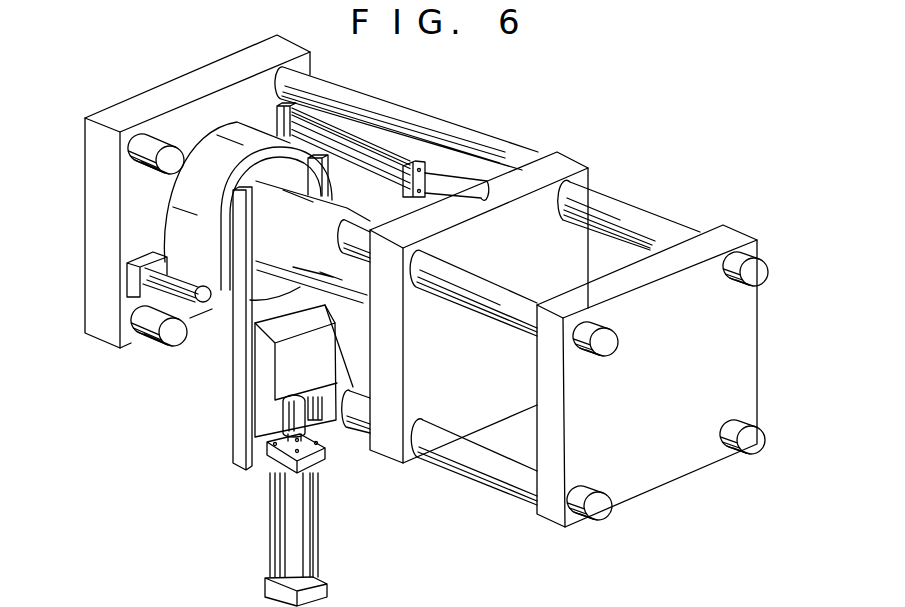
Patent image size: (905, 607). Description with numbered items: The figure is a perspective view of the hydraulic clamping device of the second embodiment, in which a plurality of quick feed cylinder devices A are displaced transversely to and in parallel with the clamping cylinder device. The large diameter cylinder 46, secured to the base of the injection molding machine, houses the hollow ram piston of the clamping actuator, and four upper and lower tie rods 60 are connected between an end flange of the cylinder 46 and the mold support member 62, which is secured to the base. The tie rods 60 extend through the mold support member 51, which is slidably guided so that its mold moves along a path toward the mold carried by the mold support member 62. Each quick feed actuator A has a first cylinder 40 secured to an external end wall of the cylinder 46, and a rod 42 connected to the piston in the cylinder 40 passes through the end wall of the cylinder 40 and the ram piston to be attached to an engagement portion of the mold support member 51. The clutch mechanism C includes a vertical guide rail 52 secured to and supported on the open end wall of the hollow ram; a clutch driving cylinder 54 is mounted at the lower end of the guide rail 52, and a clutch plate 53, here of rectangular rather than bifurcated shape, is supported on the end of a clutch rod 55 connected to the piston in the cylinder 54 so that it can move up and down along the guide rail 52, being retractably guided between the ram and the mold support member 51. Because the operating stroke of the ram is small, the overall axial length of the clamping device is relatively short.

The large diameter cylinder 46 is at (207, 150).
The quick feed hydraulic actuator A is at (365, 148).
The first cylinder 40 is at (336, 152).
The rod 42 is at (478, 165).
The tie rods 60 is at (455, 138).
The mold support member 51 is at (518, 252).
The mold support member 62 is at (678, 468).
The guide rail 52 is at (243, 395).
The clutch plate 53 is at (295, 371).
The clutch rod 55 is at (300, 418).
The clutch driving cylinder 54 is at (290, 524).
The clutch mechanism C is at (294, 539).